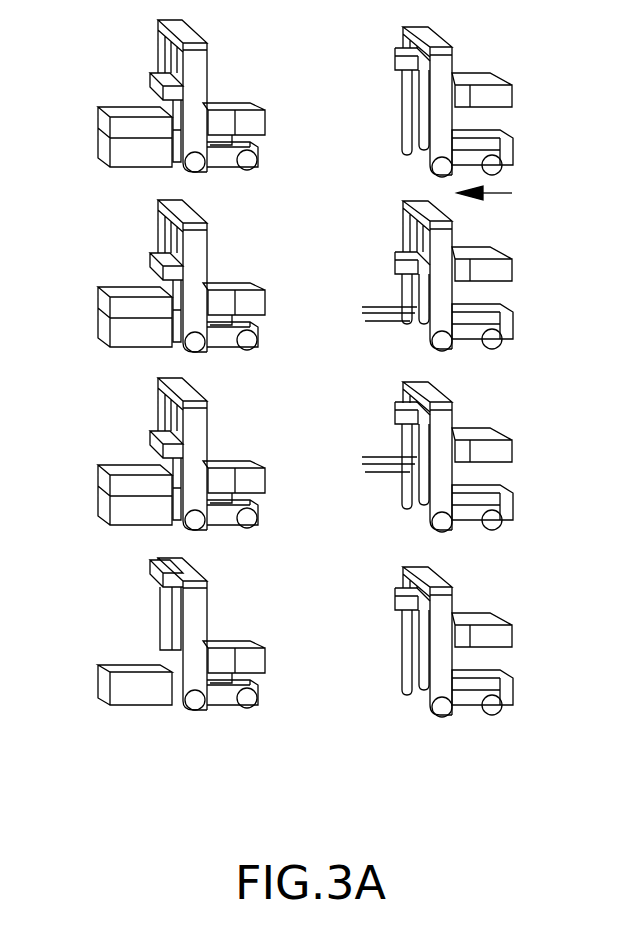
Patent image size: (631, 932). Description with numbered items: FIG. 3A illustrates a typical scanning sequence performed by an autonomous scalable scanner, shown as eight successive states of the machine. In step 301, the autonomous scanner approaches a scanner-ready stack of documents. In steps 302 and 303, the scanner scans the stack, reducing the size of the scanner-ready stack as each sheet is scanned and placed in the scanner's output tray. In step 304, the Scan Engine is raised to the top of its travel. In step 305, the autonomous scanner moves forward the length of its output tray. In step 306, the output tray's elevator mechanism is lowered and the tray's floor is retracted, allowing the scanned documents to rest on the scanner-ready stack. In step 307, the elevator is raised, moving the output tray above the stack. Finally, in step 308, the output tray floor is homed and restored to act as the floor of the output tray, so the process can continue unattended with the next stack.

The step of approaching a scanner-ready stack 301 is at (97, 152).
The step of scanning a stack of documents 302 is at (98, 330).
The step of scanning a stack of documents 303 is at (97, 510).
The step of raising the Scan Engine 304 is at (97, 688).
The step of moving forward 305 is at (513, 92).
The step of lowering the elevator and retracting the tray floor 306 is at (513, 305).
The step of raising the elevator 307 is at (513, 487).
The step of homing the output tray floor 308 is at (513, 667).